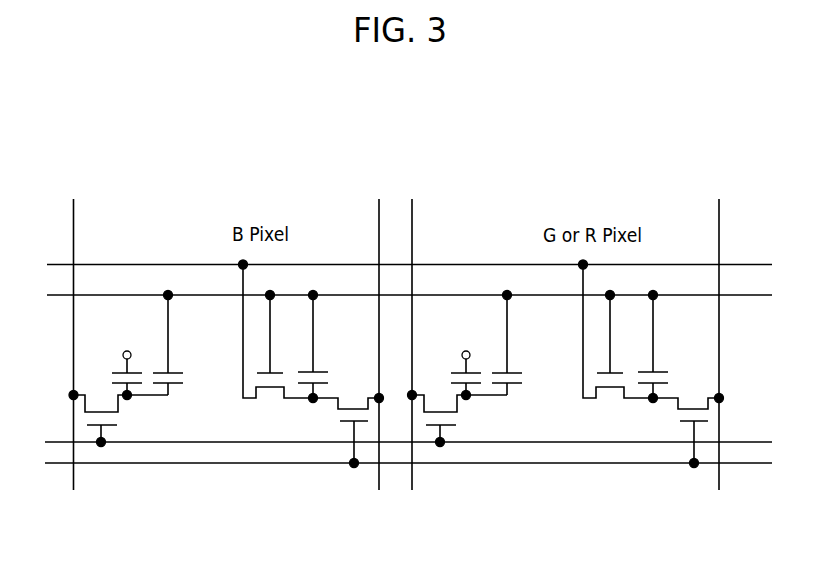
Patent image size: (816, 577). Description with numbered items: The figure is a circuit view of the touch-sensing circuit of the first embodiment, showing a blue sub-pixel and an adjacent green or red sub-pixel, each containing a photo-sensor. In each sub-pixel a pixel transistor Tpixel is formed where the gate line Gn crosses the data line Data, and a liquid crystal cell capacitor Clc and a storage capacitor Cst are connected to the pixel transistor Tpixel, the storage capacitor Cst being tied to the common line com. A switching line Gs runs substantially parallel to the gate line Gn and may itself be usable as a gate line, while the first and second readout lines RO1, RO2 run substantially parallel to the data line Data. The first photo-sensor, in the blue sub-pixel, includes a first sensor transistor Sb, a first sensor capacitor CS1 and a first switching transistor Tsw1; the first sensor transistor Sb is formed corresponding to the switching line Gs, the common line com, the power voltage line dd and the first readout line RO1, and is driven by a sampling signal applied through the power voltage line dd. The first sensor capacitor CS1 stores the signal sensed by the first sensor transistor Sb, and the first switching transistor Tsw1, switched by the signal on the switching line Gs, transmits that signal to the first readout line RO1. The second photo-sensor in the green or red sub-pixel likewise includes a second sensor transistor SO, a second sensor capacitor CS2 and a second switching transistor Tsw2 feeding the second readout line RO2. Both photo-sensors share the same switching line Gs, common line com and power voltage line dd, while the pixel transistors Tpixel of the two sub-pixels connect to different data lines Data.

The data line Data is at (242, 330).
The power voltage line dd is at (394, 260).
The common line com is at (389, 293).
The gate line Gn is at (394, 437).
The switching line Gs is at (394, 459).
The first readout line RO1 is at (362, 360).
The second readout line RO2 is at (698, 360).
The liquid crystal cell capacitor Clc is at (283, 369).
The storage capacitor Cst is at (349, 343).
The pixel transistor Tpixel is at (288, 419).
The first sensor transistor Sb is at (276, 347).
The second sensor transistor SO is at (616, 348).
The first sensor capacitor CS1 is at (320, 347).
The second sensor capacitor CS2 is at (660, 347).
The first switching transistor Tsw1 is at (348, 421).
The second switching transistor Tsw2 is at (688, 422).